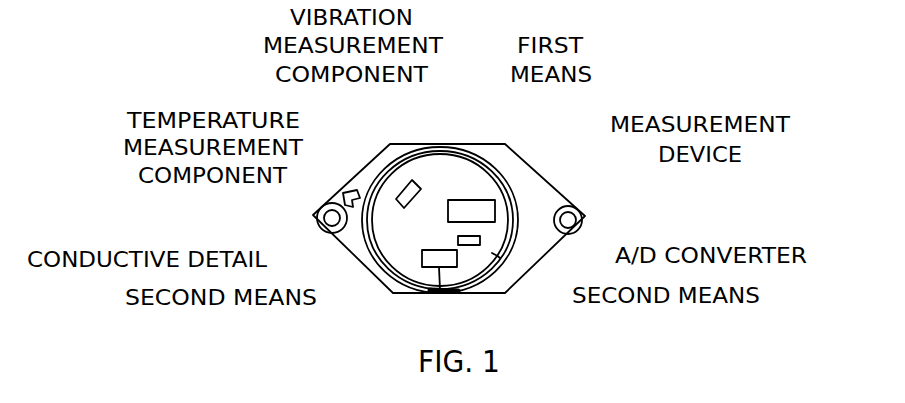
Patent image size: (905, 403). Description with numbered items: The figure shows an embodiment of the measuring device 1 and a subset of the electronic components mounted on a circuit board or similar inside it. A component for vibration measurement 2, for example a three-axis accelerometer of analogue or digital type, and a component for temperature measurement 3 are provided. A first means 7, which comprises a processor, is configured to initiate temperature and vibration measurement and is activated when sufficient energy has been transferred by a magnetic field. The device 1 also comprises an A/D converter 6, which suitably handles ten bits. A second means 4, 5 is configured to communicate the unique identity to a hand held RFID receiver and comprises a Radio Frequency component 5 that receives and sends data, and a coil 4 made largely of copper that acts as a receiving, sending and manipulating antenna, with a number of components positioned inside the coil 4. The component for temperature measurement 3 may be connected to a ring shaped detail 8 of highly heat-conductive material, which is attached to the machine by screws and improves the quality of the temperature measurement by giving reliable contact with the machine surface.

The measuring device 1 is at (553, 172).
The component for vibration measurement 2 is at (405, 178).
The component for temperature measurement 3 is at (360, 196).
The coil 4 is at (498, 256).
The Radio Frequency component 5 is at (422, 254).
The A/D converter 6 is at (482, 240).
The first means 7 is at (478, 192).
The ring shaped detail 8 is at (326, 228).